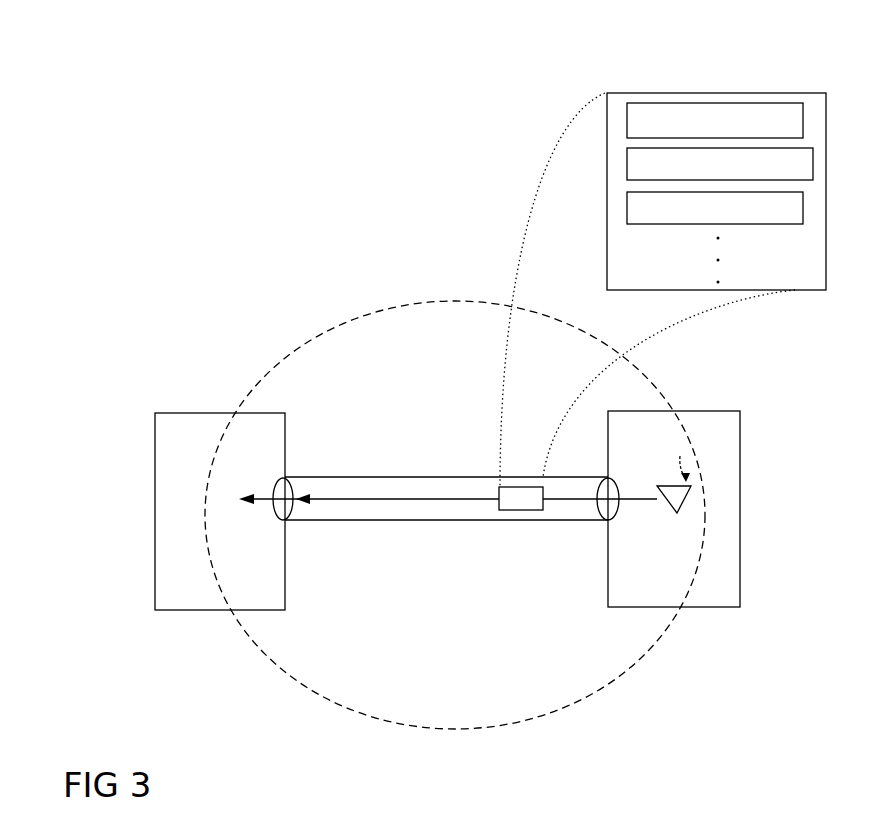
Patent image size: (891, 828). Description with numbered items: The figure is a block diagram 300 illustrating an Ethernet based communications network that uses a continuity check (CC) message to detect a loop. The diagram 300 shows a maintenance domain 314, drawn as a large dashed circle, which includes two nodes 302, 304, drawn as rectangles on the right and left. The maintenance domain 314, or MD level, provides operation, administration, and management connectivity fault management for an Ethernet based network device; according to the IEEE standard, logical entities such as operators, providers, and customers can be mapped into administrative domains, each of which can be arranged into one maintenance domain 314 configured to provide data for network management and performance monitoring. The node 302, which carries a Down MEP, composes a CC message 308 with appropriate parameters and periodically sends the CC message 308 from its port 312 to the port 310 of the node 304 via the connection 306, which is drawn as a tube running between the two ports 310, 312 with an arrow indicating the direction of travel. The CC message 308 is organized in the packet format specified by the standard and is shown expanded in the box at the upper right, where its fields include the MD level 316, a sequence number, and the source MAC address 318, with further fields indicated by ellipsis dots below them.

The block diagram 300 is at (64, 150).
The node 302 is at (740, 535).
The node 304 is at (155, 543).
The connection 306 is at (447, 475).
The CC message 308 is at (533, 511).
The port 310 is at (284, 512).
The port 312 is at (608, 521).
The maintenance domain 314 is at (336, 326).
The MD level 316 is at (803, 125).
The source MAC address 318 is at (813, 158).